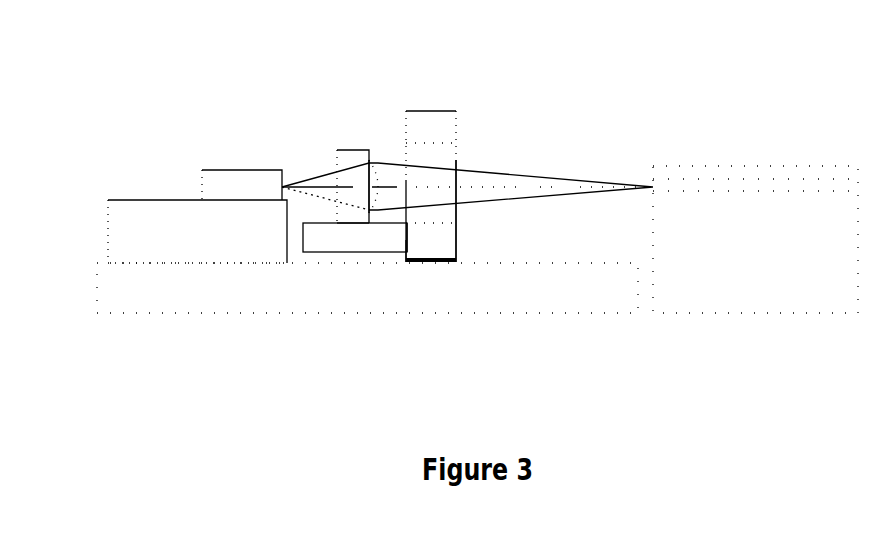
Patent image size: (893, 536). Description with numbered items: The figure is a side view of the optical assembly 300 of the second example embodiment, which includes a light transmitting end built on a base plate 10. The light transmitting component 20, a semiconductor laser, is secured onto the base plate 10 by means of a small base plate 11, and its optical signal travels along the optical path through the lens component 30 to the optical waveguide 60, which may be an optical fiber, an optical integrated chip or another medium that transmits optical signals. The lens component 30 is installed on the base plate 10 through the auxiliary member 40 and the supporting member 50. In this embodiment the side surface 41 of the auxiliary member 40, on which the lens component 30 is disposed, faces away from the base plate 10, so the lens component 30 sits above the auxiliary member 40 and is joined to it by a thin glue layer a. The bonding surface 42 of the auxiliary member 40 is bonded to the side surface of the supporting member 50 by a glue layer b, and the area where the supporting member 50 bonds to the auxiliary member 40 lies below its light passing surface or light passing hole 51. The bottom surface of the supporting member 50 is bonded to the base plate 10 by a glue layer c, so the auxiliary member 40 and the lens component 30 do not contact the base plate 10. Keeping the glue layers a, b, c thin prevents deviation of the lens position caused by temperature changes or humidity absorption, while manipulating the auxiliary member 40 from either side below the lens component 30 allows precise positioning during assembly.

The optical assembly 300 is at (103, 56).
The base plate 10 is at (173, 298).
The small base plate 11 is at (174, 213).
The light transmitting component 20 is at (241, 180).
The lens component 30 is at (358, 155).
The auxiliary member 40 is at (320, 243).
The side surface 41 is at (317, 182).
The bonding surface 42 is at (405, 240).
The supporting member 50 is at (440, 118).
The light passing surface or light passing hole 51 is at (455, 160).
The optical waveguide 60 is at (692, 177).
The glue layer a is at (352, 225).
The glue layer b is at (407, 258).
The glue layer c is at (458, 261).